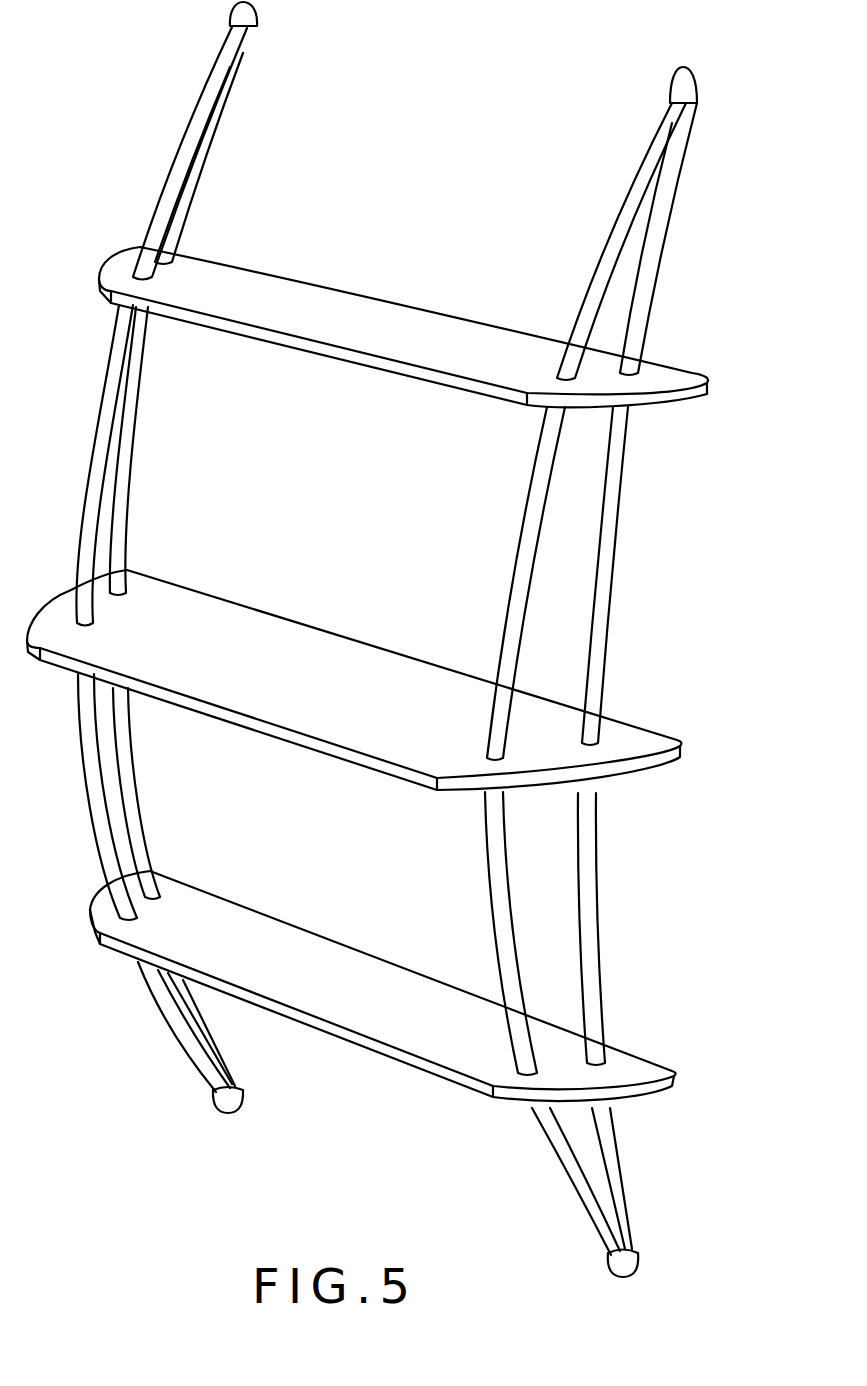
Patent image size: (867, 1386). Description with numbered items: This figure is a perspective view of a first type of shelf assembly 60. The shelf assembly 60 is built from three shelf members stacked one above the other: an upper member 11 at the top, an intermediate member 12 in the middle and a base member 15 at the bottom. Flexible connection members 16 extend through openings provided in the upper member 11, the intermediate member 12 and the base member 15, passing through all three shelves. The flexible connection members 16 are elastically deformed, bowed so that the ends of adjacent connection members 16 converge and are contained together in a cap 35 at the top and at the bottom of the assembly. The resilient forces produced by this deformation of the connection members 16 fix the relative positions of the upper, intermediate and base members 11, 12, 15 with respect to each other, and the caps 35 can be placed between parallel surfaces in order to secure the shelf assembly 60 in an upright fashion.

The shelf assembly 60 is at (412, 120).
The cap 35 is at (697, 75).
The upper member 11 is at (685, 370).
The flexible connection member 16 is at (613, 530).
The intermediate member 12 is at (647, 740).
The base member 15 is at (660, 1057).